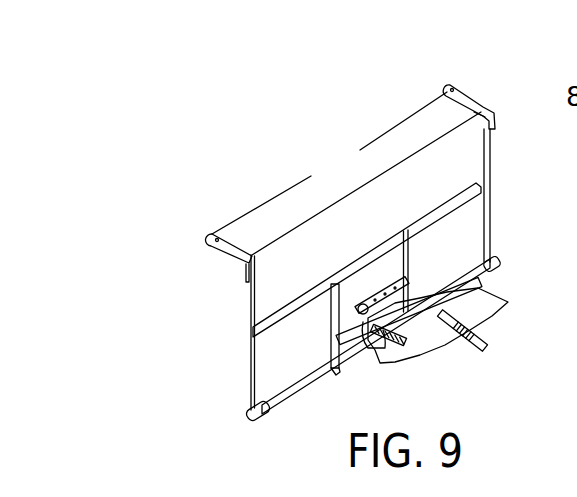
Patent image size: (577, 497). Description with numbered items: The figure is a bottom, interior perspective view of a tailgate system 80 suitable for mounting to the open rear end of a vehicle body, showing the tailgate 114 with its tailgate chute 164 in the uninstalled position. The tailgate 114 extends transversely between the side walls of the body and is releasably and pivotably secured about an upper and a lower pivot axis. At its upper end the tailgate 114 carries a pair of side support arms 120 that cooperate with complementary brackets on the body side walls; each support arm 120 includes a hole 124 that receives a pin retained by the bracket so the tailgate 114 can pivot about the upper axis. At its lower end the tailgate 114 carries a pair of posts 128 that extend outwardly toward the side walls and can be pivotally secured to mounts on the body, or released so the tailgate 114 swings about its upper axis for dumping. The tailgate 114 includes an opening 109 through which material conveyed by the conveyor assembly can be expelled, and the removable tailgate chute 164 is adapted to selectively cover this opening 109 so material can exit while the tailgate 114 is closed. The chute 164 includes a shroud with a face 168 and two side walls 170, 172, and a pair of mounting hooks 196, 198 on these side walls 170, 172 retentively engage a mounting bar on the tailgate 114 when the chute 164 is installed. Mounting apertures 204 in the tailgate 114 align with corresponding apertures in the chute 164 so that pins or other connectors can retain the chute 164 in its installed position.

The tailgate system 80 is at (184, 197).
The tailgate 114 is at (467, 86).
The side support arms 120 is at (445, 86).
The hole 124 is at (346, 173).
The posts 128 is at (494, 260).
The mounting apertures 204 is at (253, 352).
The opening 109 is at (355, 350).
The mounting hook 196 is at (478, 285).
The tailgate chute 164 is at (436, 336).
The side wall 170 is at (388, 357).
The side wall 172 is at (488, 318).
The face 168 is at (456, 344).
The mounting hook 198 is at (372, 358).